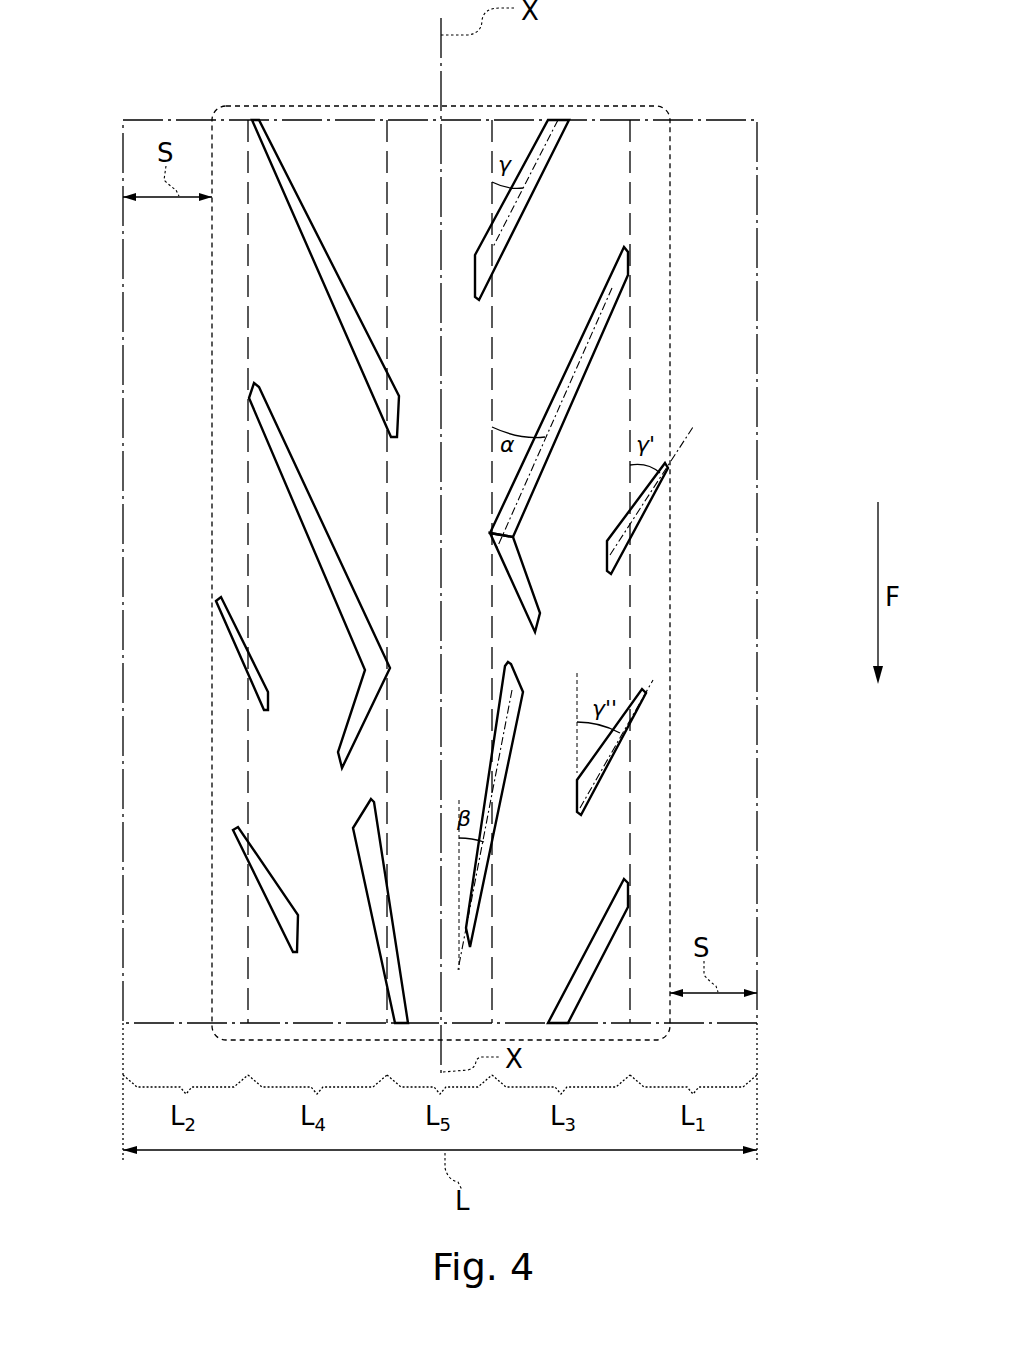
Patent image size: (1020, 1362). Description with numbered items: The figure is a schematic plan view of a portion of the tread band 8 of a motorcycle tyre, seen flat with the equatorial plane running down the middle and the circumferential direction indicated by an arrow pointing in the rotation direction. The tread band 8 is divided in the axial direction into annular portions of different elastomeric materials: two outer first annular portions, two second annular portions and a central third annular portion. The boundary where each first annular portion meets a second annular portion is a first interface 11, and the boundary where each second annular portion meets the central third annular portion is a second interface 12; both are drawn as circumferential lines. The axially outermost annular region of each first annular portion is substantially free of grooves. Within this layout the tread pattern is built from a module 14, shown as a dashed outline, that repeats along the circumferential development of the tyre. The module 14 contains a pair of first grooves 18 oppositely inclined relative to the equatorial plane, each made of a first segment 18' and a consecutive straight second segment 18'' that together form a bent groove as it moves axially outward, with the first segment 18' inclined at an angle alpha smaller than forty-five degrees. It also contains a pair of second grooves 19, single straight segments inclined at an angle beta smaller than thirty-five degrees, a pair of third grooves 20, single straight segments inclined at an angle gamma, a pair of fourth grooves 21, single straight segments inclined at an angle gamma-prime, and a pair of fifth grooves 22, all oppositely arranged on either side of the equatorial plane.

The tread band 8 is at (800, 494).
The first interface 11 is at (247, 160).
The second interface 12 is at (383, 160).
The module 14 is at (267, 106).
The first groove 18 is at (447, 507).
The first segment 18' is at (666, 397).
The second segment 18'' is at (669, 595).
The second groove 19 is at (365, 865).
The third groove 20 is at (320, 287).
The fourth groove 21 is at (238, 650).
The fifth groove 22 is at (260, 896).